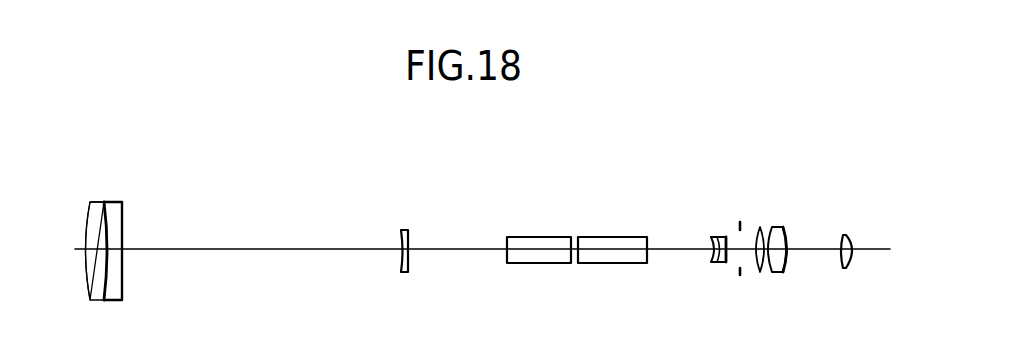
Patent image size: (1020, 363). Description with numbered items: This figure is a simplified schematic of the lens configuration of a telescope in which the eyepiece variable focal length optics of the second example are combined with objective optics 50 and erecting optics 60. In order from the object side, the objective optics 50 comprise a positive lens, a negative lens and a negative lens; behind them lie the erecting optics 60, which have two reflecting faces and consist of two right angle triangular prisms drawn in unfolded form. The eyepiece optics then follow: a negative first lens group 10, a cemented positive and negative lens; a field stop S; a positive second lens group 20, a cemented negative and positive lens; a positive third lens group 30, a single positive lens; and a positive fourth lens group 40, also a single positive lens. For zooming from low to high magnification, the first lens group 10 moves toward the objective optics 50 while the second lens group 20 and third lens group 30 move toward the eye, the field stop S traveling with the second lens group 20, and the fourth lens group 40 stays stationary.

The first lens group 10 is at (693, 228).
The second lens group 20 is at (760, 226).
The third lens group 30 is at (777, 226).
The fourth lens group 40 is at (868, 231).
The objective optics 50 is at (410, 173).
The erecting optics 60 is at (497, 212).
The field stop S is at (740, 222).